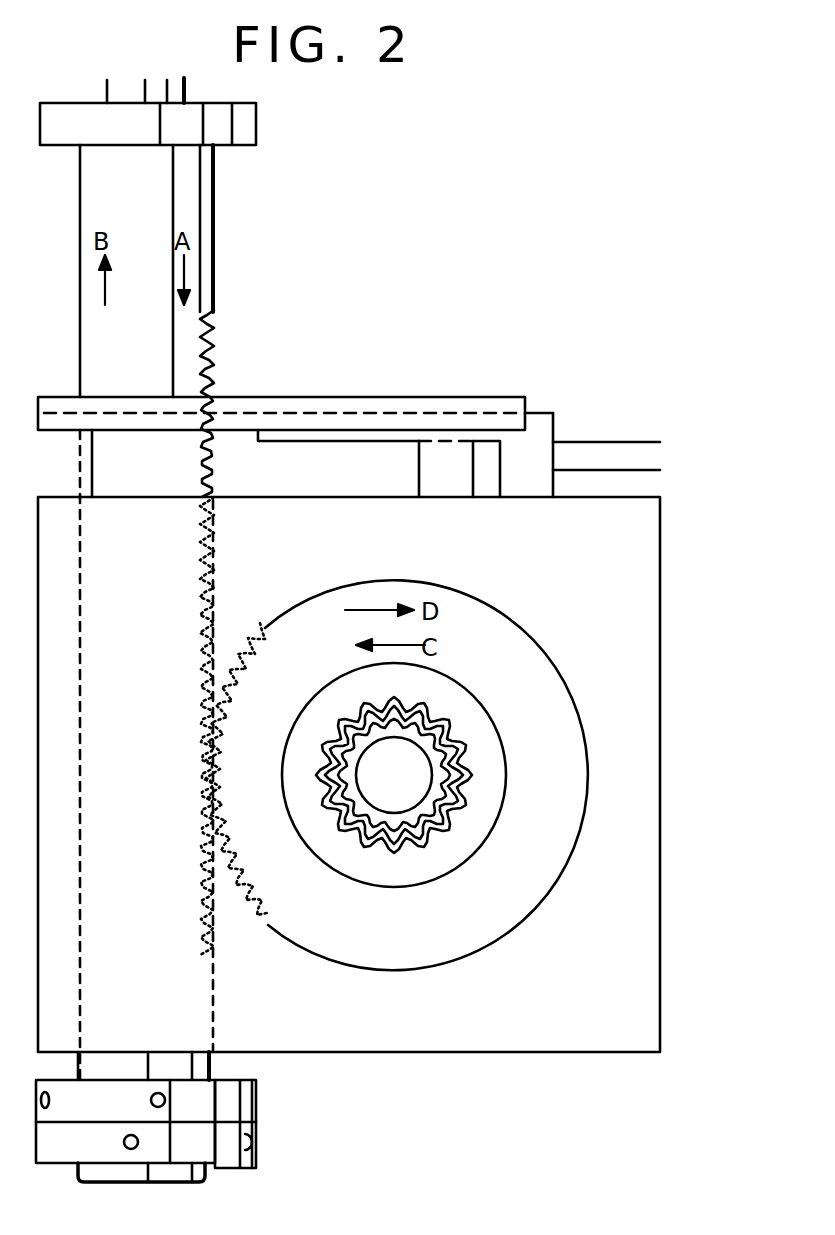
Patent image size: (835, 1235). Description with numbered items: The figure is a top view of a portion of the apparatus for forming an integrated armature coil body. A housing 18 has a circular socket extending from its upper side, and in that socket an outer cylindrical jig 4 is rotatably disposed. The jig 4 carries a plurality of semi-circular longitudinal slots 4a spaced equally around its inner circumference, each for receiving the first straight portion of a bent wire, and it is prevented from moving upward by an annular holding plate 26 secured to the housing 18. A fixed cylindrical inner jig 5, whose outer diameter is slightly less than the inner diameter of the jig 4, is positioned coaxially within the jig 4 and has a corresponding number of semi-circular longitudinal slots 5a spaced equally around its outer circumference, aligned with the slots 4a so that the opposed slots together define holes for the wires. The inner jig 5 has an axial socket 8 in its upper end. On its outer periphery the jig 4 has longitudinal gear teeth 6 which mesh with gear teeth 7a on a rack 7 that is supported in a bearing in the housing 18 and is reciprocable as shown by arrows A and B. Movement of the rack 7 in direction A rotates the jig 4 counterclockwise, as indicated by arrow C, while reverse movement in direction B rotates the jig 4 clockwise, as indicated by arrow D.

The outer cylindrical jig 4 is at (375, 880).
The slots 4a is at (412, 857).
The fixed cylindrical inner jig 5 is at (466, 800).
The slots 5a is at (450, 835).
The gear teeth 6 is at (253, 905).
The rack 7 is at (216, 278).
The gear teeth 7a is at (210, 618).
The axial socket 8 is at (412, 778).
The housing 18 is at (660, 918).
The annular holding plate 26 is at (545, 877).